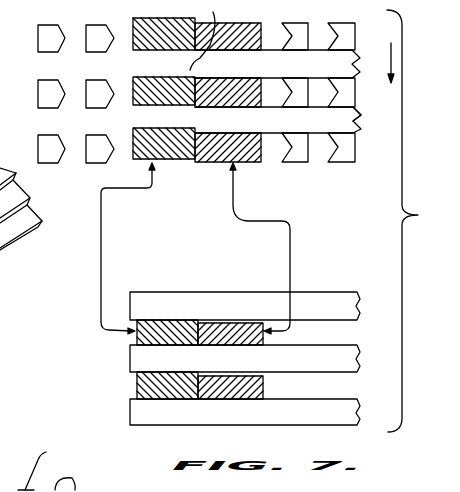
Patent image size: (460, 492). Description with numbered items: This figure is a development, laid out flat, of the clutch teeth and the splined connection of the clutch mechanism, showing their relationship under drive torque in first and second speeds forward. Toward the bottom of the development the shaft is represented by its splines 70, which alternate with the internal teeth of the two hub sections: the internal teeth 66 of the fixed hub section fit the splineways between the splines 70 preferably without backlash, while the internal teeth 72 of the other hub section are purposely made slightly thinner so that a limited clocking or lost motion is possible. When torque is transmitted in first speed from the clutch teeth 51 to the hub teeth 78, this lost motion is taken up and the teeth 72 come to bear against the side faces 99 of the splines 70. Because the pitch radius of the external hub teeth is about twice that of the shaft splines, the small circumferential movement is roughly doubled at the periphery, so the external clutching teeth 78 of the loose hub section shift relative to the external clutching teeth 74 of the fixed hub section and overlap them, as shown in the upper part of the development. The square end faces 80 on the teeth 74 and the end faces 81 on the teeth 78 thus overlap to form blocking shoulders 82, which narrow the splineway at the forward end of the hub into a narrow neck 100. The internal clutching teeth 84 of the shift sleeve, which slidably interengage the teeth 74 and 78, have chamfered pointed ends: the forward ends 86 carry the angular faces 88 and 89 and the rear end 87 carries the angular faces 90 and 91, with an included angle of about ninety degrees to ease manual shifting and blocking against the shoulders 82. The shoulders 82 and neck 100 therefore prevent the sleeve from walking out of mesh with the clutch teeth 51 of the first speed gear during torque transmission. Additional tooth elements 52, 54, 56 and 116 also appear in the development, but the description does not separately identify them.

The wafer 54 is at (40, 36).
The wafer 116 is at (32, 159).
The wafer 56 is at (100, 156).
The wafer 52 is at (296, 27).
The end faces 81 is at (348, 27).
The external clutching teeth 74 is at (175, 42).
The narrow neck 100 is at (185, 87).
The end faces 80 is at (195, 142).
The forward ends 86 is at (212, 60).
The clutching teeth 78 is at (247, 43).
The blocking shoulders 82 is at (202, 38).
The angular face 88 is at (214, 104).
The angular face 90 is at (362, 124).
The internal clutching teeth 84 is at (300, 69).
The angular face 89 is at (200, 130).
The angular face 91 is at (365, 108).
The rear end 87 is at (352, 60).
The splines 70 is at (238, 300).
The internal teeth 66 is at (160, 386).
The internal teeth 72 is at (250, 340).
The side faces 99 is at (360, 346).
The clutch teeth 51 is at (37, 471).